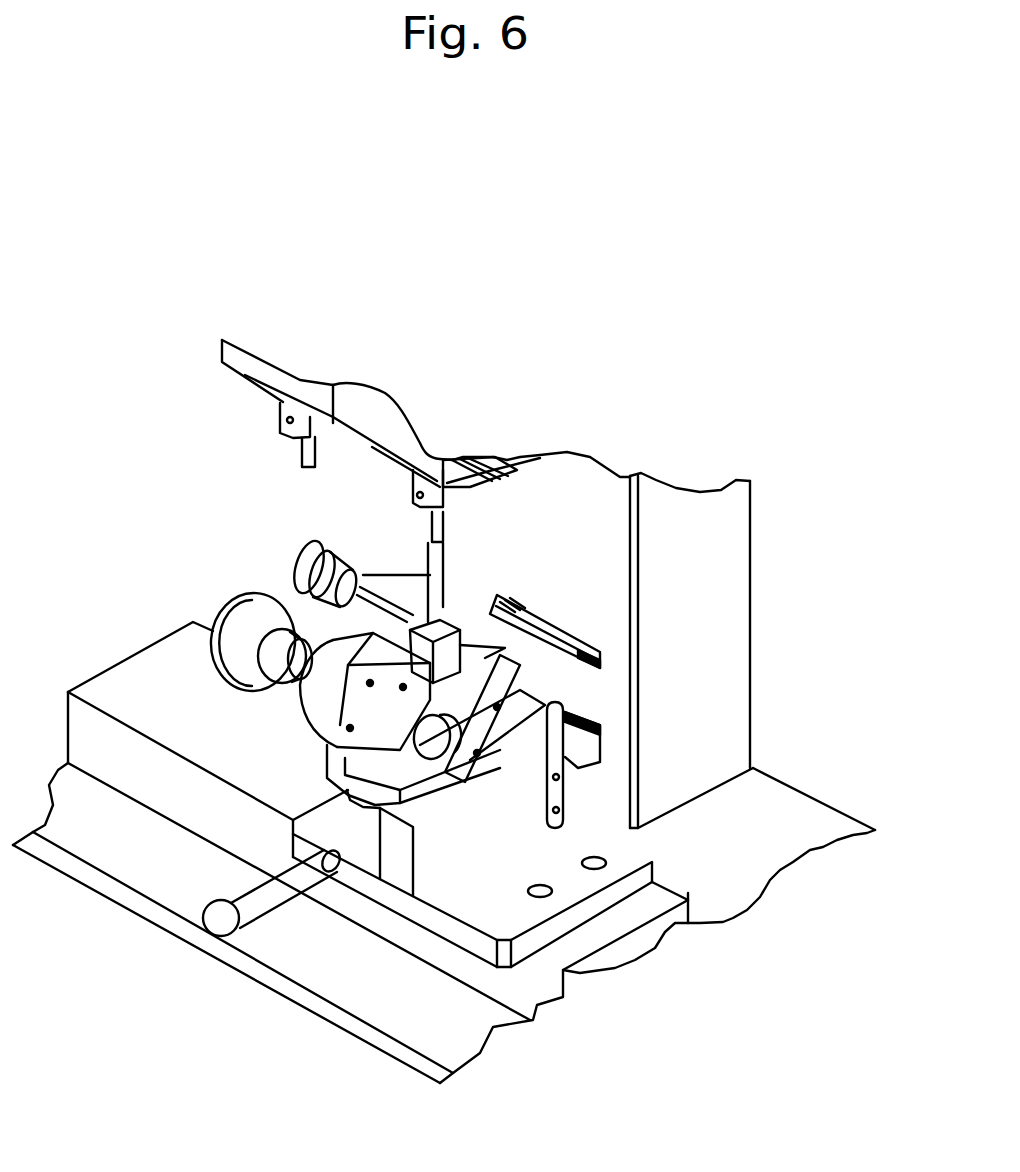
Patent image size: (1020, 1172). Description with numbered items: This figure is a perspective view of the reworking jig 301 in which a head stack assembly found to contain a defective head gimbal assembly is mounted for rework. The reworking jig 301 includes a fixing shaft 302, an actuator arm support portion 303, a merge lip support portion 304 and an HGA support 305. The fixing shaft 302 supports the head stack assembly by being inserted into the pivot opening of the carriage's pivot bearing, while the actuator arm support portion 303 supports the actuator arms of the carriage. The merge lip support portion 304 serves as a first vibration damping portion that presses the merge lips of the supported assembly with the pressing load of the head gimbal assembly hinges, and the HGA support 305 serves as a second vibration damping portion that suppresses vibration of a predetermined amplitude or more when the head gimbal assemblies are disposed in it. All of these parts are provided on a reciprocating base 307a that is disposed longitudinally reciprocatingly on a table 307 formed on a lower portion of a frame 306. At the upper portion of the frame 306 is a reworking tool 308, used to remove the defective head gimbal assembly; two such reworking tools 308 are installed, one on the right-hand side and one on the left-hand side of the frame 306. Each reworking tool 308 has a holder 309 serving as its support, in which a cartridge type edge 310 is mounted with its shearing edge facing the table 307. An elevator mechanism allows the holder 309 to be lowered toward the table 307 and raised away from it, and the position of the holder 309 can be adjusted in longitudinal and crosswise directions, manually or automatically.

The reworking jig 301 is at (786, 532).
The fixing shaft 302 is at (507, 787).
The actuator arm support portion 303 is at (391, 572).
The merge lip support portion 304 is at (567, 627).
The HGA support 305 is at (600, 723).
The frame 306 is at (753, 483).
The table 307 is at (195, 723).
The reciprocating base 307a is at (477, 902).
The reworking tool 308 is at (238, 353).
The holder 309 is at (285, 407).
The cartridge type edge 310 is at (300, 452).